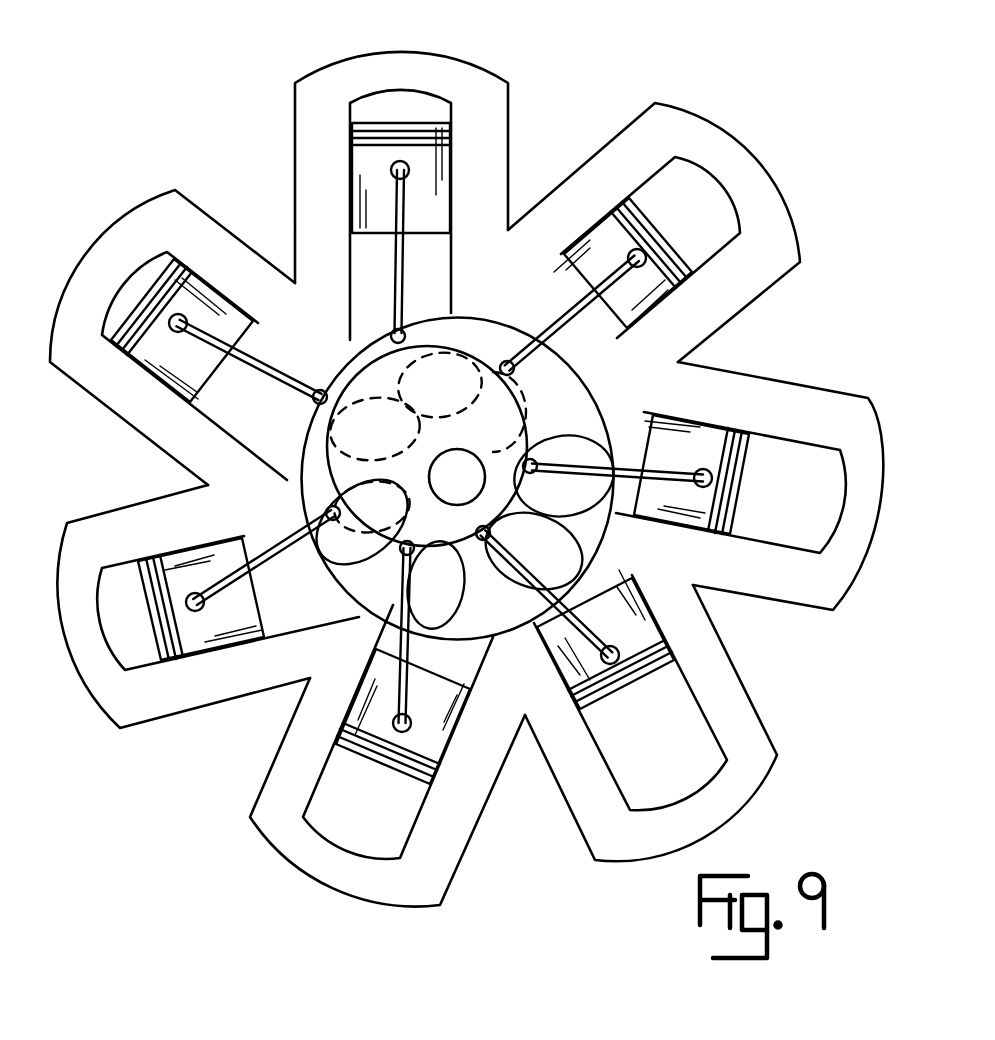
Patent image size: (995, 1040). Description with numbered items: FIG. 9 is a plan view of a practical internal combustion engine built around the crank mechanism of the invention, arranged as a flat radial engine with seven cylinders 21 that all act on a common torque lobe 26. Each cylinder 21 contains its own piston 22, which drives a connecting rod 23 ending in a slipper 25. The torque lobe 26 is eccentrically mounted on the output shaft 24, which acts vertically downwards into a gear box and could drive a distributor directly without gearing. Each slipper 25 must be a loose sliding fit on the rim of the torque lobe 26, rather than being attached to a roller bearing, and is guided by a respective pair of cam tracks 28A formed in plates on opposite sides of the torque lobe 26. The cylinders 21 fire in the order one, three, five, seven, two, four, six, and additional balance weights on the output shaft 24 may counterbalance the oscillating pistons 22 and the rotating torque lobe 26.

The cylinder 21 is at (455, 110).
The piston 22 is at (427, 227).
The connecting rod 23 is at (267, 370).
The output shaft 24 is at (444, 492).
The slipper 25 is at (478, 318).
The torque lobe 26 is at (481, 335).
The cam track 28A is at (452, 380).